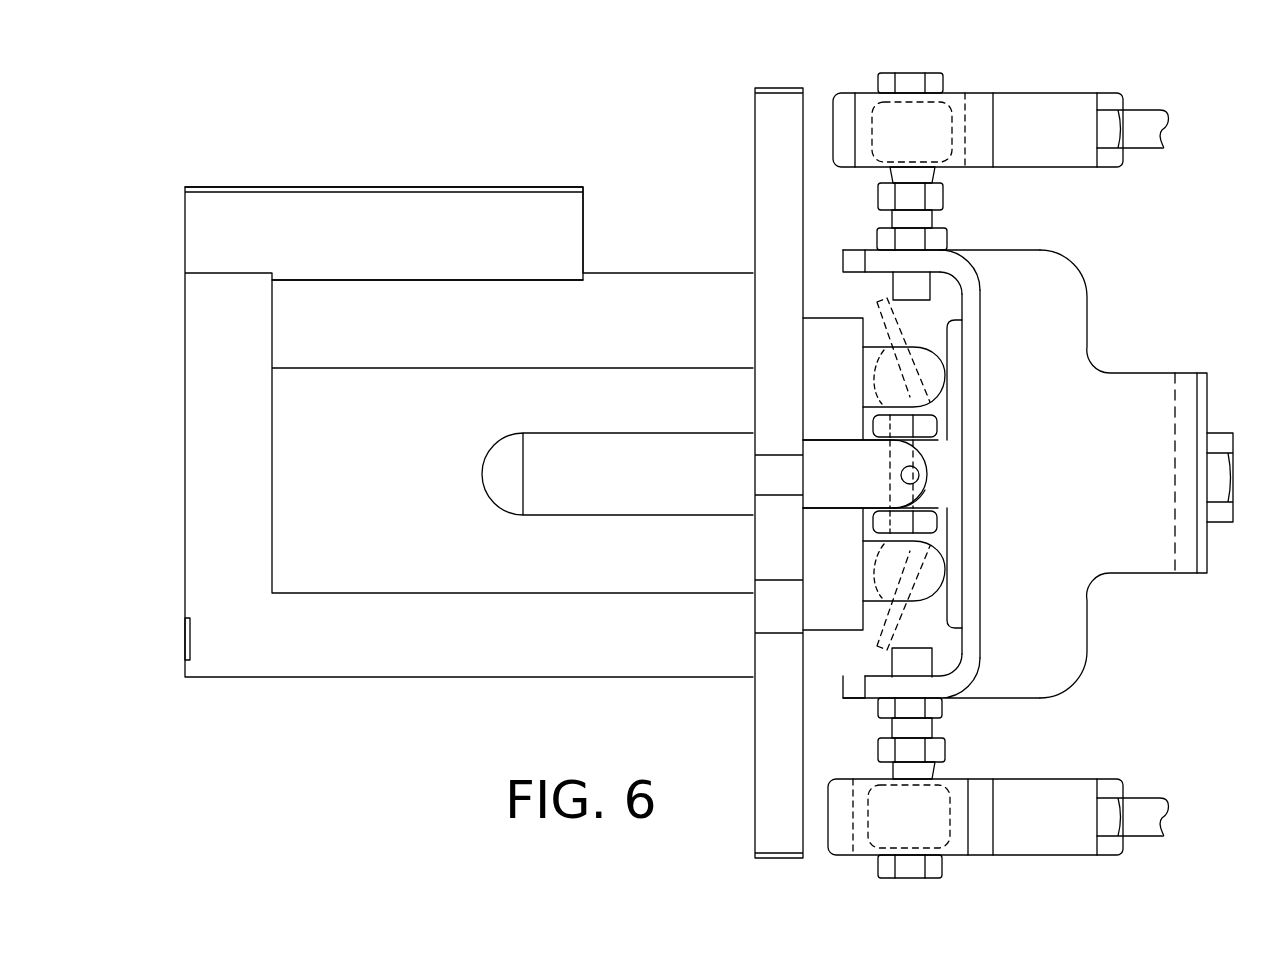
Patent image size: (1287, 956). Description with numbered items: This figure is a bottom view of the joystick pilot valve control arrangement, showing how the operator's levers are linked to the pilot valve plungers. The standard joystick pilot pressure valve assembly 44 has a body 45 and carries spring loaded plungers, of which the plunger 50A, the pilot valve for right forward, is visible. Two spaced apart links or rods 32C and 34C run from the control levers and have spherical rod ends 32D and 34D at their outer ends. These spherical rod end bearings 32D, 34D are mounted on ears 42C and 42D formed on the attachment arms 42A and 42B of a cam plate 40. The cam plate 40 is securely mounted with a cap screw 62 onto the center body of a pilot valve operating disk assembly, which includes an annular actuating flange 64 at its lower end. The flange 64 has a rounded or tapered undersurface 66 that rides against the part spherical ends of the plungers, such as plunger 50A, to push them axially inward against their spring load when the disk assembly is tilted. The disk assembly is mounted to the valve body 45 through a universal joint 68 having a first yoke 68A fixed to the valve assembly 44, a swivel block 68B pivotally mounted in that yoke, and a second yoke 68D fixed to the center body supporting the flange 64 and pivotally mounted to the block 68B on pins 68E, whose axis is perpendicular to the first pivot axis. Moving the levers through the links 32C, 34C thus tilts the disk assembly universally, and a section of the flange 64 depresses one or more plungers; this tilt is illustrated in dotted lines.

The link or rod 32C is at (1140, 120).
The spherical rod end 32D is at (866, 103).
The link or rod 34C is at (1160, 800).
The spherical rod end 34D is at (960, 830).
The cam plate 40 is at (1132, 553).
The attachment arm 42A is at (1073, 282).
The attachment arm 42B is at (1055, 676).
The ear 42C is at (843, 262).
The ear 42D is at (843, 686).
The joystick pilot pressure valve assembly 44 is at (432, 641).
The body 45 is at (608, 286).
The plunger 50A is at (938, 376).
The cap screw 62 is at (1218, 444).
The annular actuating flange 64 is at (877, 302).
The rounded or tapered undersurface 66 is at (945, 284).
The universal joint 68 is at (922, 466).
The first yoke 68A is at (873, 426).
The swivel block 68B is at (873, 514).
The second yoke 68D is at (934, 490).
The pins 68E is at (900, 472).